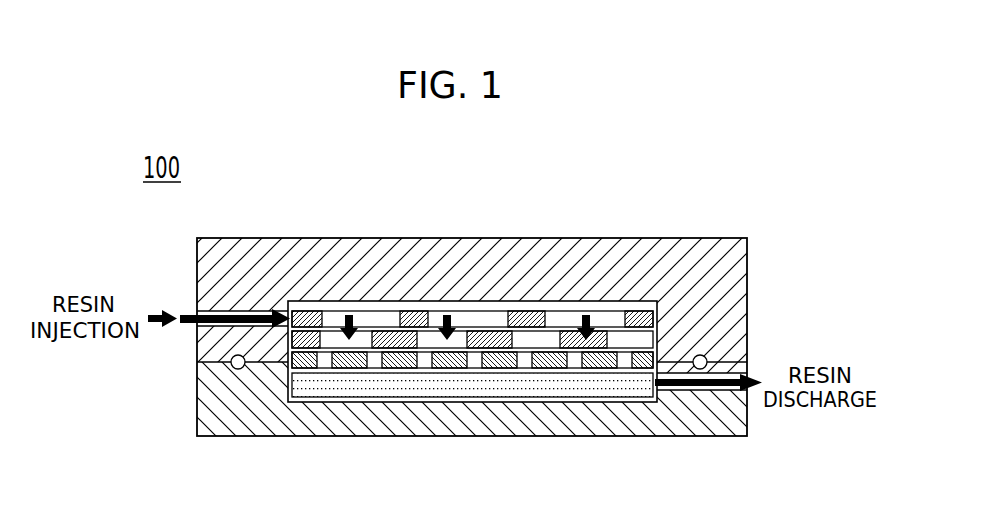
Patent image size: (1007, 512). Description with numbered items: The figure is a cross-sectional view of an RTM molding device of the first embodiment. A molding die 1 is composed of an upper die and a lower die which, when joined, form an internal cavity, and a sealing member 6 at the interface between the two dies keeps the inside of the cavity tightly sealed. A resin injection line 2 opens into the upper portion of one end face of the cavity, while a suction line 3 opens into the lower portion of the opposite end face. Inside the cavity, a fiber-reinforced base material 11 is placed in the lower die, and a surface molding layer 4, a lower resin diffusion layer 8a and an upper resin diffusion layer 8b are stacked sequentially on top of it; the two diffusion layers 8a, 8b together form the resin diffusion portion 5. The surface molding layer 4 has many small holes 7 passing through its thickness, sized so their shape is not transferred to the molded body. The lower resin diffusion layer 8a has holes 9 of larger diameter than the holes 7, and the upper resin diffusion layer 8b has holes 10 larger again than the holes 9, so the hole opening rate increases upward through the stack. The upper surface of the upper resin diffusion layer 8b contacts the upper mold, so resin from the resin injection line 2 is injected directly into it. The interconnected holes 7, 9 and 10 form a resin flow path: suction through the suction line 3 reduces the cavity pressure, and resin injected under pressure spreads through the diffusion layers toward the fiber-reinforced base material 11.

The molding die 1 is at (212, 266).
The resin injection line 2 is at (236, 311).
The suction line 3 is at (707, 391).
The surface molding layer 4 is at (333, 350).
The resin diffusion portion 5 is at (472, 243).
The sealing member 6 is at (708, 357).
The holes 7 is at (625, 363).
The lower resin diffusion layer 8a is at (387, 332).
The upper resin diffusion layer 8b is at (407, 311).
The holes 9 is at (548, 343).
The holes 10 is at (487, 317).
The fiber-reinforced base material 11 is at (328, 385).